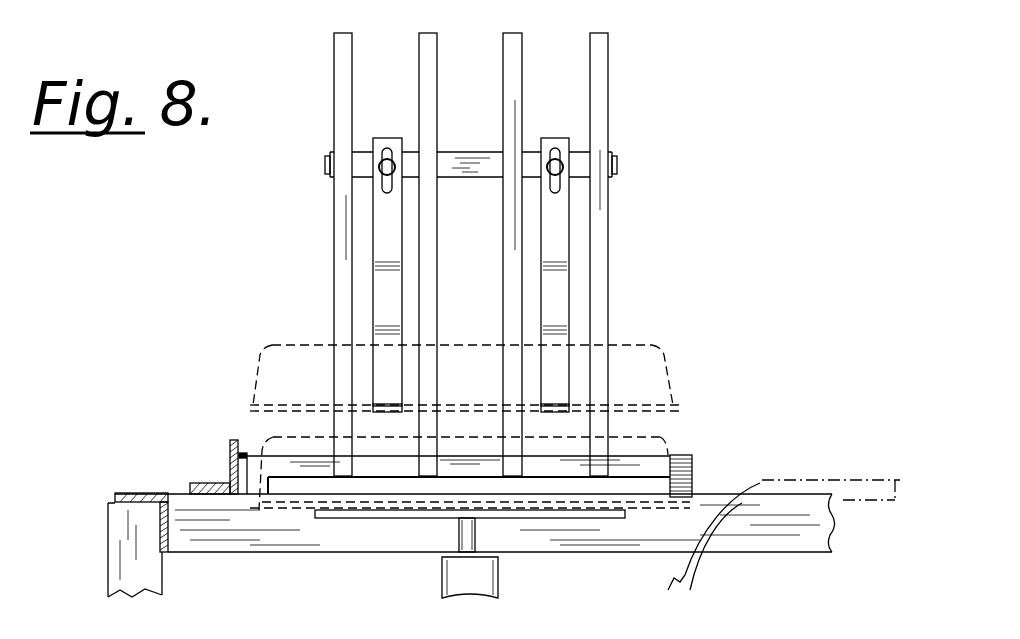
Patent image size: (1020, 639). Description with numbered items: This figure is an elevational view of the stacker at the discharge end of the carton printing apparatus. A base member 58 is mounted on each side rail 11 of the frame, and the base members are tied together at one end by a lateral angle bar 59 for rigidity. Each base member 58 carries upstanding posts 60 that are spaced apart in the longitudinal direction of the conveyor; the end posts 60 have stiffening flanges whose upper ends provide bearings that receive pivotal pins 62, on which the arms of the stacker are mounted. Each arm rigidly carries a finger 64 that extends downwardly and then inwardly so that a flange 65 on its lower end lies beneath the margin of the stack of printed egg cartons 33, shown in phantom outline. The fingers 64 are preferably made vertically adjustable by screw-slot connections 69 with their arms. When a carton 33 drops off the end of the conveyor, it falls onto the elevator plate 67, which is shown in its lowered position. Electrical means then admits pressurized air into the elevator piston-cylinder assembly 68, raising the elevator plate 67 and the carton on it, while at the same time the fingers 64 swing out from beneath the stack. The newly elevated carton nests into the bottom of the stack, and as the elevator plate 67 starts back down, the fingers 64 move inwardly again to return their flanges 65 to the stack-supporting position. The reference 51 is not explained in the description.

The side rail 11 is at (786, 512).
The egg carton 33 is at (676, 358).
The clamping fixture assembly 51 is at (630, 74).
The base member 58 is at (680, 455).
The lateral angle bar 59 is at (211, 458).
The upstanding posts 60 is at (423, 55).
The pivotal pins 62 is at (614, 163).
The finger 64 is at (383, 240).
The flange 65 is at (553, 408).
The elevator plate 67 is at (353, 518).
The elevator piston-cylinder assembly 68 is at (498, 573).
The screw-slot connections 69 is at (386, 150).